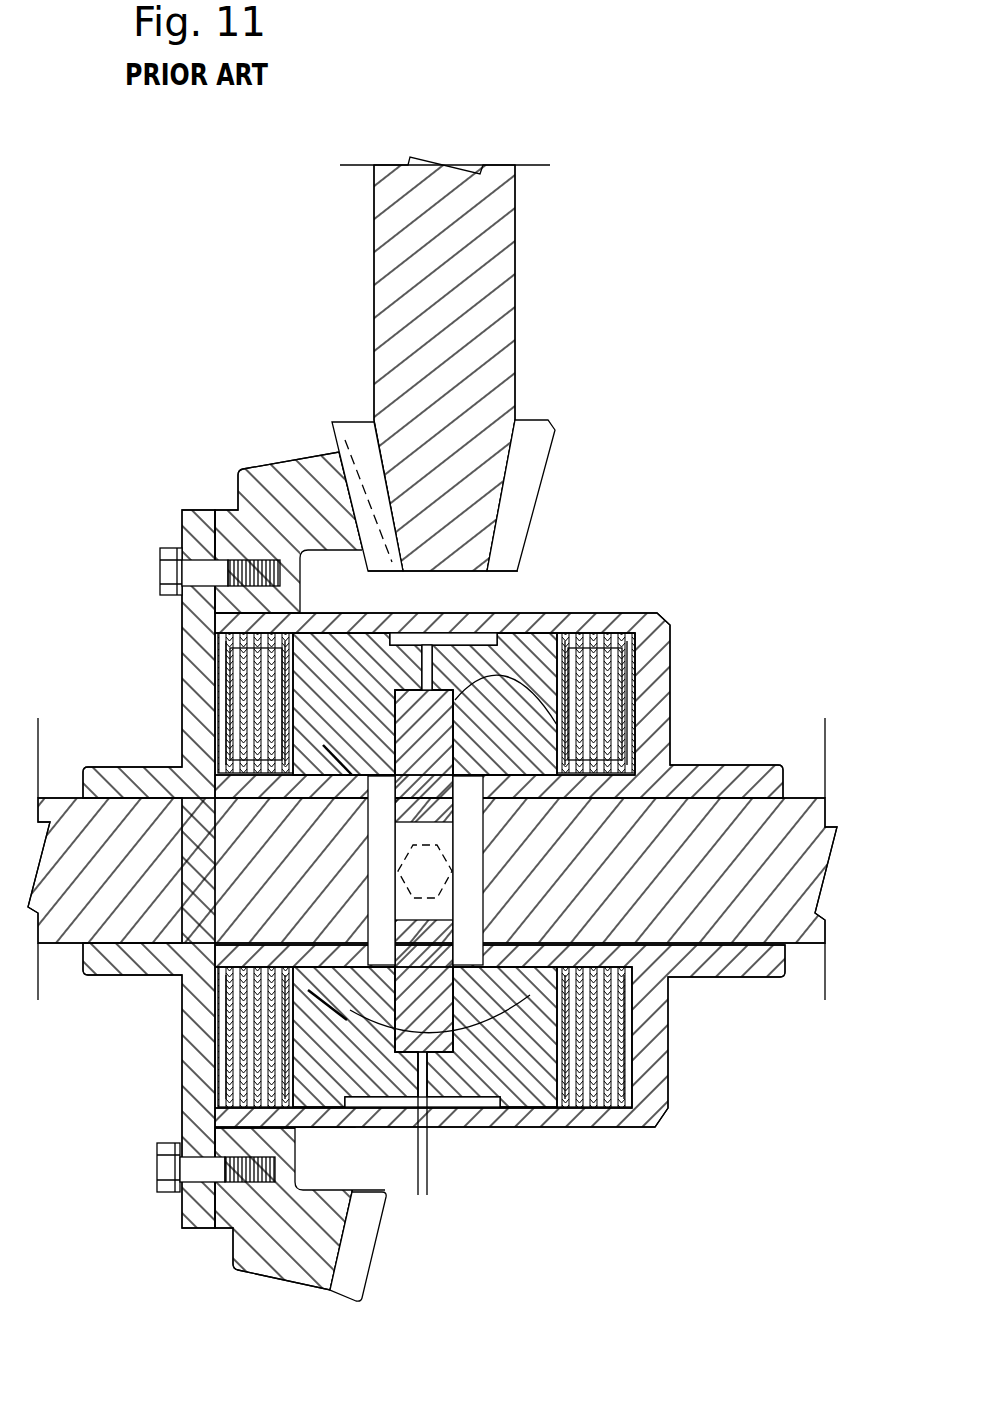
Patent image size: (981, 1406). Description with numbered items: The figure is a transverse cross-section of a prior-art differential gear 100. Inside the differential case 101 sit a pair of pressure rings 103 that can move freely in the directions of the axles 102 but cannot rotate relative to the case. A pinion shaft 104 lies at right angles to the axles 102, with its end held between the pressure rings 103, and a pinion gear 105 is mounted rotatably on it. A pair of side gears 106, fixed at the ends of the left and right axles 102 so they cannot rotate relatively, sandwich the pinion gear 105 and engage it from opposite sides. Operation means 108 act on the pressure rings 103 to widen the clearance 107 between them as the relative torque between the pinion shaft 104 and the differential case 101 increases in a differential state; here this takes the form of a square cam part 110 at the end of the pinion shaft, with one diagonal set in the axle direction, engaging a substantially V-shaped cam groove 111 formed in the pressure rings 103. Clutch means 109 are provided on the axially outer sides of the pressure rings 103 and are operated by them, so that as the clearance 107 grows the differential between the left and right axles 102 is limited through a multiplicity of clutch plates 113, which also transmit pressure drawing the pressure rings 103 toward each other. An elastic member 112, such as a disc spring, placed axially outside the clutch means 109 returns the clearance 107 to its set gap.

The differential gear 100 is at (638, 506).
The differential case 101 is at (670, 729).
The axles 102 is at (66, 920).
The pressure rings 103 is at (352, 1082).
The pinion shaft 104 is at (394, 853).
The pinion gear 105 is at (485, 722).
The side gears 106 is at (357, 740).
The clearance 107 is at (427, 1182).
The operation means 108 is at (448, 1068).
The clutch means 109 is at (213, 1128).
The square cam part 110 is at (443, 690).
The cam groove 111 is at (417, 645).
The elastic member 112 is at (222, 1043).
The clutch plates 113 is at (598, 1109).